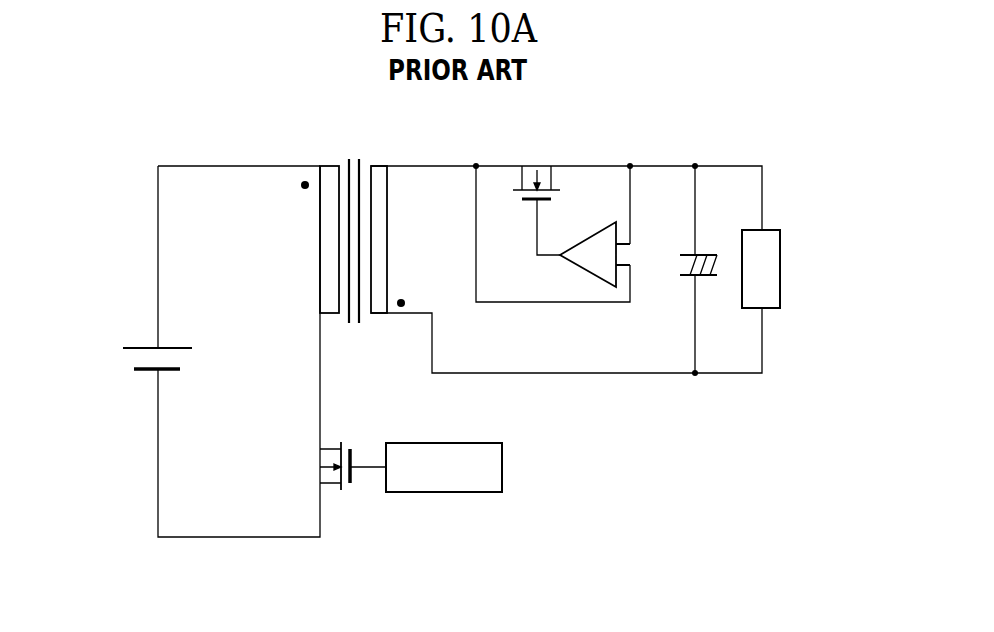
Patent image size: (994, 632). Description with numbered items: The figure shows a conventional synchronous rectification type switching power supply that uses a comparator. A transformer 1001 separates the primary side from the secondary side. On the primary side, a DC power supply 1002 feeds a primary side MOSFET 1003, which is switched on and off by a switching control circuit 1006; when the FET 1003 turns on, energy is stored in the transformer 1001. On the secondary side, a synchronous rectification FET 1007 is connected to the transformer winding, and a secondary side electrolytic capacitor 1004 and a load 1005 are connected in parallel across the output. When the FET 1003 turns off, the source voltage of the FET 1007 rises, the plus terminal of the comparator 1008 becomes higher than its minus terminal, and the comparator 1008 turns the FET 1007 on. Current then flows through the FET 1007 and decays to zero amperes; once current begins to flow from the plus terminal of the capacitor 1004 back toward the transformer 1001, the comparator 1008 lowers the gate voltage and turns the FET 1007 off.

The transformer 1001 is at (370, 138).
The battery (DC power source) 1002 is at (176, 346).
The primary side MOSFET 1003 is at (320, 466).
The secondary side electrolytic capacitor 1004 is at (689, 277).
The load 1005 is at (781, 258).
The switching control circuit 1006 is at (502, 467).
The synchronous rectification FET 1007 is at (562, 146).
The comparator 1008 is at (583, 270).